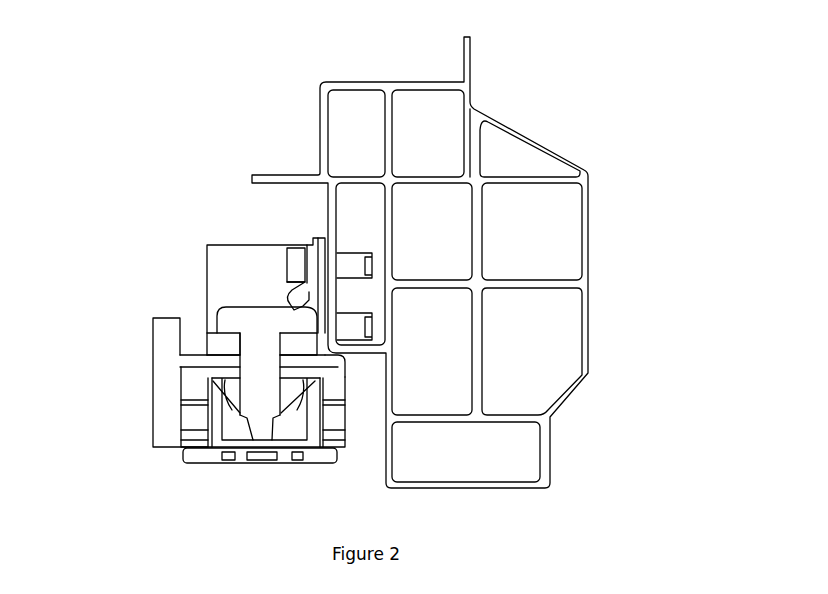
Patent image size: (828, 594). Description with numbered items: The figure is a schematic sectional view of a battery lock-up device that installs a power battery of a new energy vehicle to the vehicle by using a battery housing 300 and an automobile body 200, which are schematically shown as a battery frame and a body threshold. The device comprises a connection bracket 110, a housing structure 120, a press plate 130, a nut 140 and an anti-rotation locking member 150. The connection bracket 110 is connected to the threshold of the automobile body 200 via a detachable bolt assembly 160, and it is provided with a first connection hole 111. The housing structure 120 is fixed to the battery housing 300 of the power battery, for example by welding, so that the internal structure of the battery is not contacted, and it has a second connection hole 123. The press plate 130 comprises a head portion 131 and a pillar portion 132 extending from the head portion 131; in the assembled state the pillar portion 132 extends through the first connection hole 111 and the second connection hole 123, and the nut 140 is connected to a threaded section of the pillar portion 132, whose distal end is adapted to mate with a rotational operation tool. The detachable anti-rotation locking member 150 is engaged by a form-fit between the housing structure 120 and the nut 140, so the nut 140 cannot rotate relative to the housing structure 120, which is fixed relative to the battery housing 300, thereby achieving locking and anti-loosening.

The connection bracket 110 is at (323, 259).
The first connection hole 111 is at (330, 360).
The housing structure 120 is at (206, 421).
The second connection hole 123 is at (237, 460).
The press plate 130 is at (263, 322).
The head portion 131 is at (272, 315).
The pillar portion 132 is at (257, 400).
The nut 140 is at (296, 401).
The anti-rotation locking member 150 is at (212, 457).
The bolt assembly 160 is at (358, 263).
The automobile body 200 is at (588, 252).
The battery housing 300 is at (165, 368).